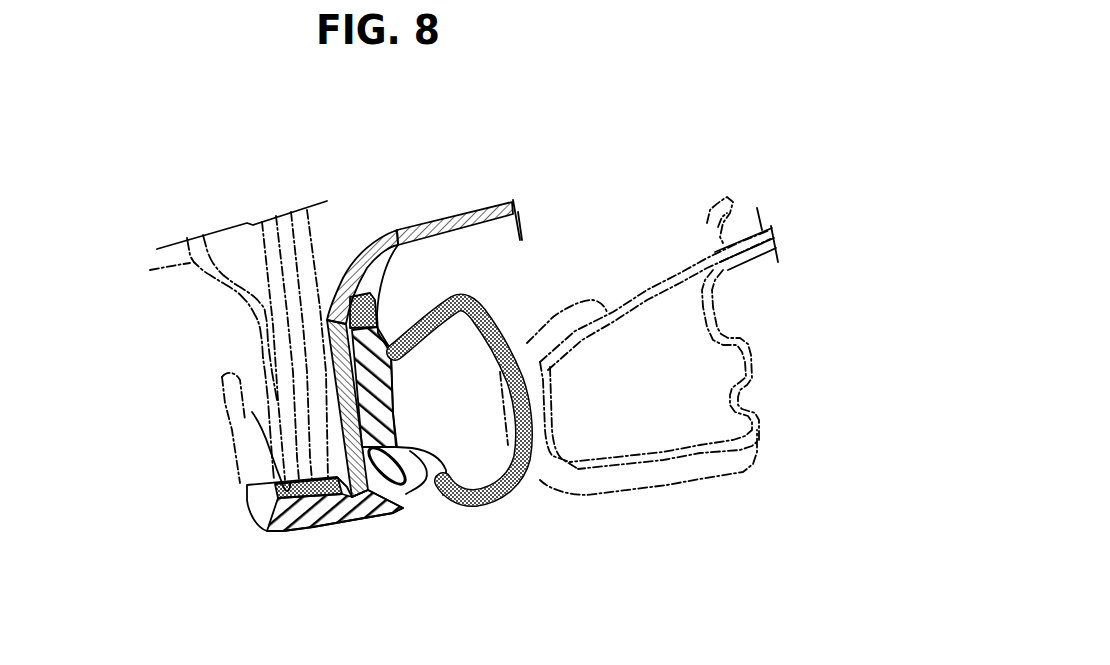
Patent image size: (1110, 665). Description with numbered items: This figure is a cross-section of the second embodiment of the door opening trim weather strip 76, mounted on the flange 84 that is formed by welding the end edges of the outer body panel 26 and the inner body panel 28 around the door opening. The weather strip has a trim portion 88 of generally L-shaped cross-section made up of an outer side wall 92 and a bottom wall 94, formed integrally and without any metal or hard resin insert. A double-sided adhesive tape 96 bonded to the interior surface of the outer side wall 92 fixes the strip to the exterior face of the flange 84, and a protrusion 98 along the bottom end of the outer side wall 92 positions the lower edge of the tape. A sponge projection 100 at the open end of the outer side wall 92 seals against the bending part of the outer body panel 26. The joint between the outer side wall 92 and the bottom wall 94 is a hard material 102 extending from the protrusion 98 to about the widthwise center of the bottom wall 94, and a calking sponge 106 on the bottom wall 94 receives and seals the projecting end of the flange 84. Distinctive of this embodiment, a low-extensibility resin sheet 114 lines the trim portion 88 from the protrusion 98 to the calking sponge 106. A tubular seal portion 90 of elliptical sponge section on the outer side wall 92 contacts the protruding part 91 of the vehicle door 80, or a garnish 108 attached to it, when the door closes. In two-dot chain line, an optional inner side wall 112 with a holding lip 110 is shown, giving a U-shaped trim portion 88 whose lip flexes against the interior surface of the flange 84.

The outer body panel 26 is at (467, 212).
The inner body panel 28 is at (157, 270).
The door opening trim weather strip 76 is at (503, 514).
The vehicle door 80 is at (737, 243).
The flange 84 is at (307, 401).
The trim portion 88 is at (260, 510).
The tubular seal portion 90 is at (510, 338).
The protruding part 91 is at (663, 455).
The outer side wall 92 is at (383, 422).
The bottom wall 94 is at (350, 523).
The double-sided adhesive tape 96 is at (330, 362).
The protrusion 98 is at (433, 473).
The projection 100 is at (397, 230).
The hard material 102 is at (400, 480).
The calking sponge 106 is at (270, 520).
The garnish 108 is at (717, 463).
The holding lip 110 is at (273, 442).
The inner side wall 112 is at (237, 442).
The resin sheet 114 is at (390, 508).